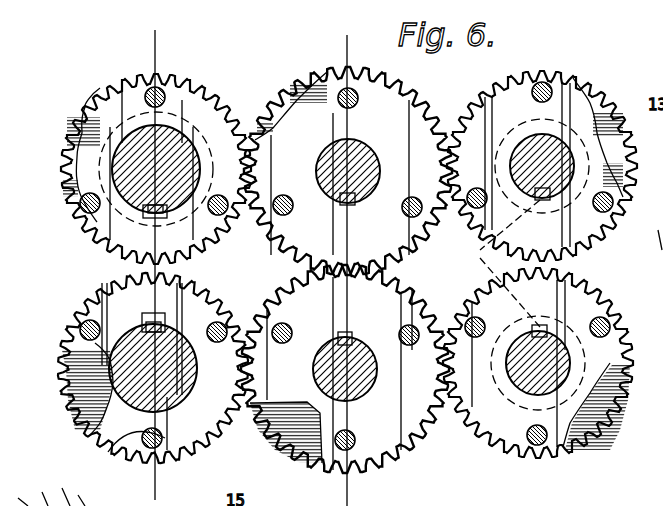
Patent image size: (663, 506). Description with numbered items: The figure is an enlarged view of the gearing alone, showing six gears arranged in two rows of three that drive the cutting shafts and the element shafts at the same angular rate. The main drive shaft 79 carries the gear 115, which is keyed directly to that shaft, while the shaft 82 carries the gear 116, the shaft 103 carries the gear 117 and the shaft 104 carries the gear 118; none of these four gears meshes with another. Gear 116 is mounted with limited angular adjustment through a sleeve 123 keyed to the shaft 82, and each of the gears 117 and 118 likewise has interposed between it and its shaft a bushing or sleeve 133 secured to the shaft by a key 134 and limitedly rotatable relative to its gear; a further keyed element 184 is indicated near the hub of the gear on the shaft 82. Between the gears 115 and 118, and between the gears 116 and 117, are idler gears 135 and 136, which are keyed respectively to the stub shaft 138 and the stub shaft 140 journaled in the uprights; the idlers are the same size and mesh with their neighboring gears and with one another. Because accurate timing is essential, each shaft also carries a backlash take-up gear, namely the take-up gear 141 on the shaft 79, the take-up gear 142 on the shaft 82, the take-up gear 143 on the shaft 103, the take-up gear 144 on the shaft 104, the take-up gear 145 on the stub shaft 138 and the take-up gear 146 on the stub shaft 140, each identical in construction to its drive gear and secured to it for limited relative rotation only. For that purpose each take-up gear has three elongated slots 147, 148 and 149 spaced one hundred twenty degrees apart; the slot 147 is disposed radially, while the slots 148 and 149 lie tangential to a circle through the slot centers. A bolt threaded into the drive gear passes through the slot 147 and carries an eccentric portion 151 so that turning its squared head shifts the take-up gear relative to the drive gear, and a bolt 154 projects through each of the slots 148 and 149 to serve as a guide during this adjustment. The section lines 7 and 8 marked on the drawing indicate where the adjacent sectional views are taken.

The section line 7- 7 is at (153, 53).
The section line 8- 8 is at (345, 58).
The shaft 82 is at (118, 107).
The gear 116 is at (68, 133).
The sleeve 123 is at (195, 97).
The backlash take-up gear 142 is at (217, 103).
The key 184 is at (180, 217).
The idler gear 136 is at (293, 108).
The backlash take-up gear 146 is at (393, 97).
The stub shaft 140 is at (378, 157).
The bushing or sleeve 133 is at (513, 125).
The shaft 103 is at (540, 133).
The backlash take-up gear 143 is at (565, 100).
The gear 117 is at (600, 125).
The key 134 is at (488, 263).
The backlash take-up gear 141 is at (193, 297).
The main drive shaft 79 is at (175, 385).
The elongated slot 148 is at (90, 300).
The bolt 154 is at (80, 328).
The elongated slot 149 is at (246, 286).
The elongated slot 147 is at (157, 450).
The eccentric portion 151 is at (115, 445).
The gear 115 is at (56, 362).
The backlash take-up gear 145 is at (407, 422).
The stub shaft 138 is at (358, 382).
The idler gear 135 is at (305, 423).
The backlash take-up gear 144 is at (495, 300).
The shaft 104 is at (558, 340).
The gear 118 is at (590, 413).